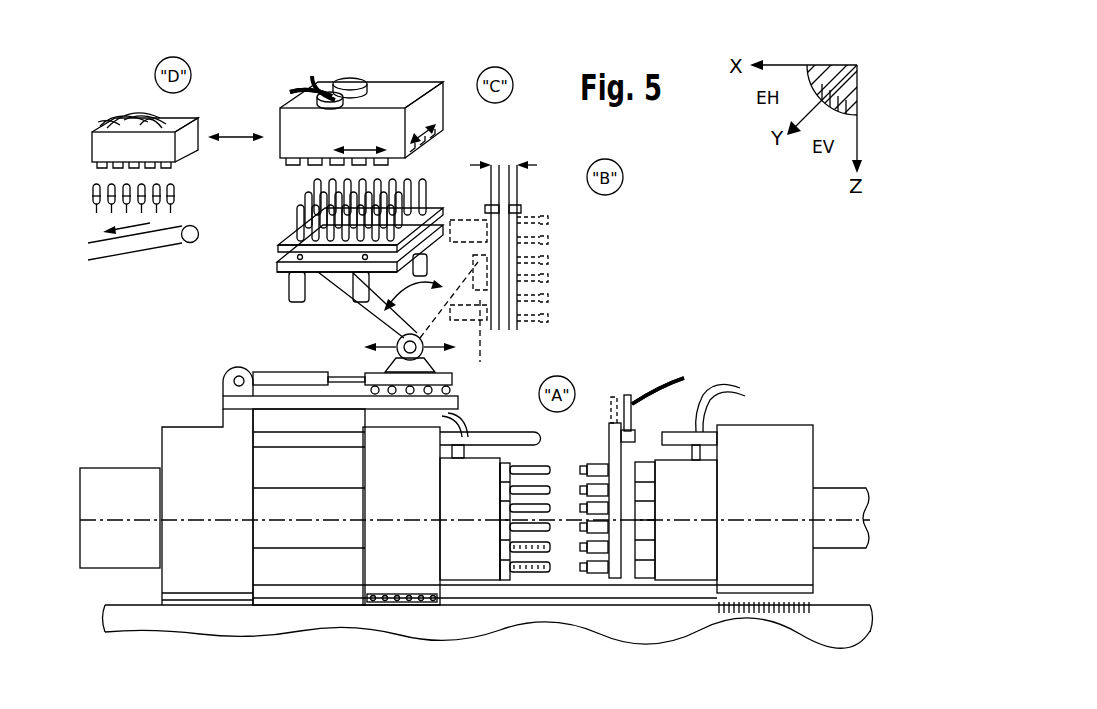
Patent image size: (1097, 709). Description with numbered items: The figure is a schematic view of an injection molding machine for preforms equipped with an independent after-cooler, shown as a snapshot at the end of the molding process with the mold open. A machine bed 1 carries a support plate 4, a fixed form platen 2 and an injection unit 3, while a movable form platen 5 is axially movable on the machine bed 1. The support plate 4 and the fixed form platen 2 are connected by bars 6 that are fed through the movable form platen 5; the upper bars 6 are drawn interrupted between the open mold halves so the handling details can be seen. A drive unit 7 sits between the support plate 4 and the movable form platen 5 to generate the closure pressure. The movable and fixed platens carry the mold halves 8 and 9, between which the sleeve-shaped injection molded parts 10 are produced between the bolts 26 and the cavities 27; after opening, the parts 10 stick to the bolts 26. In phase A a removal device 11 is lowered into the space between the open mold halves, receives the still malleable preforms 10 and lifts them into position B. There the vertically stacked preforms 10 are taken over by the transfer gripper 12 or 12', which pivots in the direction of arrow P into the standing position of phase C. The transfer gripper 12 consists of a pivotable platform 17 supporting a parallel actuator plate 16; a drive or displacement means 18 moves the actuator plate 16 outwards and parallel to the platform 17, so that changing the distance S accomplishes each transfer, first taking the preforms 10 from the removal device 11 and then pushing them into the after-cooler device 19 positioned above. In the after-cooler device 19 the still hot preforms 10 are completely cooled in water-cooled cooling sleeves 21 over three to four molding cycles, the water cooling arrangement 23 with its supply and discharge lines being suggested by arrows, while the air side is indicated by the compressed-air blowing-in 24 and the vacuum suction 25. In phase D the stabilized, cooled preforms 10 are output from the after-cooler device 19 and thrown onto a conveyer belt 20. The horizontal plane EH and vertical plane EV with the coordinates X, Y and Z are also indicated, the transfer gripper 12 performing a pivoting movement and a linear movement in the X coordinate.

The machine bed 1 is at (757, 622).
The fixed form platen 2 is at (770, 487).
The injection unit 3 is at (838, 492).
The support plate 4 is at (186, 433).
The movable form platen 5 is at (408, 487).
The bars 6 is at (487, 431).
The drive unit 7 is at (307, 514).
The mold half 8 is at (474, 501).
The mold half 9 is at (689, 501).
The injection molded parts (preforms) 10 is at (178, 193).
The removal device 11 is at (591, 414).
The transfer gripper 12 is at (319, 291).
The transfer gripper (alternate position) 12' is at (527, 233).
The actuator plate 16 is at (279, 247).
The platform 17 is at (278, 265).
The drive and/or displacement means 18 is at (428, 307).
The after-cooler device 19 is at (198, 128).
The conveyer belt 20 is at (160, 247).
The cooling sleeves 21 is at (595, 578).
The water cooling arrangement 23 is at (312, 80).
The compressed air supply (blowing in) 24 is at (288, 91).
The vacuum (air suction) 25 is at (487, 247).
The bolts 26 is at (549, 492).
The cavities 27 is at (645, 575).